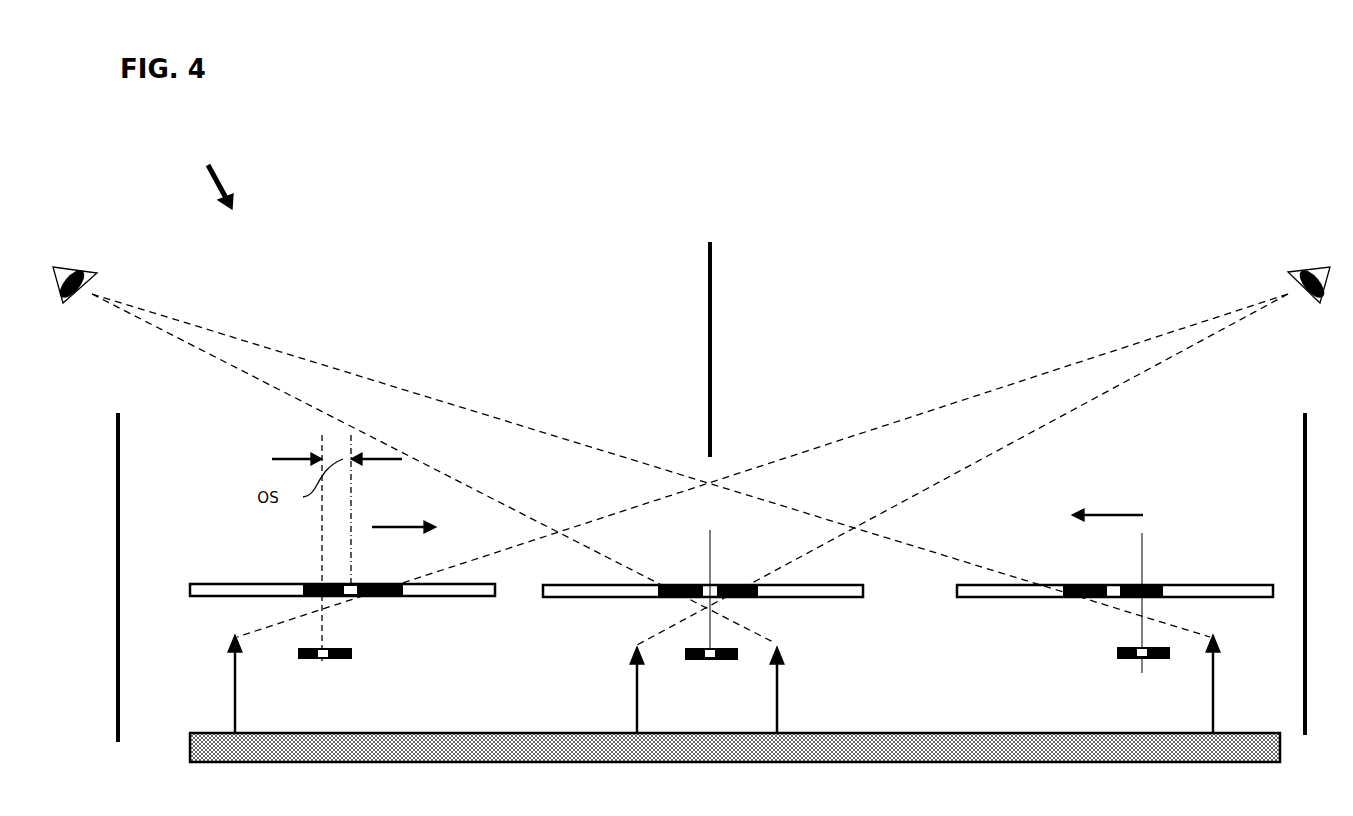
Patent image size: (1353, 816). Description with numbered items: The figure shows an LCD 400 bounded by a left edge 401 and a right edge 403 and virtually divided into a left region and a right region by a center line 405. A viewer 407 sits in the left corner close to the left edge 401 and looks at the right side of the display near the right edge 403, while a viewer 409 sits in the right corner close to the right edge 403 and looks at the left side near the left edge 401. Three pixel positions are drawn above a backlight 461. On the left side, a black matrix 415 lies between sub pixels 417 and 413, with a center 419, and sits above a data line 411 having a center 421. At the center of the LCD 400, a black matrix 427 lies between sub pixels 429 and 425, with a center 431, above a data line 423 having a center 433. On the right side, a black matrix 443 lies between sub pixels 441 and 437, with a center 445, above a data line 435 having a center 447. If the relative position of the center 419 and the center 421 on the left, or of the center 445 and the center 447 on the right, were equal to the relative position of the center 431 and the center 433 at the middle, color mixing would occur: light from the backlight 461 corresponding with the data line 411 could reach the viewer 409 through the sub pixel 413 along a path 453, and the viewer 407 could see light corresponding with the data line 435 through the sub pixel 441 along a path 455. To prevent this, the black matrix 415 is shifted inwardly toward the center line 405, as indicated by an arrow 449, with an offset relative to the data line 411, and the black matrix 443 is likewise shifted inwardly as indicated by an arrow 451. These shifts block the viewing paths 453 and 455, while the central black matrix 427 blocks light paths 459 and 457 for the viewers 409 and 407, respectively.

The LCD 400 is at (188, 157).
The left edge 401 is at (113, 573).
The right edge 403 is at (1303, 498).
The center line 405 is at (708, 298).
The viewer 407 is at (72, 268).
The viewer 409 is at (1310, 267).
The data line 411 is at (297, 652).
The sub pixel 413 is at (438, 598).
The black matrix 415 is at (320, 583).
The sub pixel 417 is at (250, 583).
The center of black matrix 419 is at (357, 583).
The center of data line 421 is at (324, 662).
The data line 423 is at (687, 652).
The sub pixel 425 is at (842, 598).
The black matrix 427 is at (682, 585).
The sub pixel 429 is at (610, 598).
The center of black matrix 431 is at (727, 585).
The center of data line 433 is at (712, 662).
The data line 435 is at (1117, 653).
The sub pixel 437 is at (1222, 598).
The sub pixel 441 is at (1003, 598).
The black matrix 443 is at (1153, 586).
The center of black matrix 445 is at (1113, 586).
The center of data line 447 is at (1143, 663).
The arrow 449 is at (402, 525).
The arrow 451 is at (1105, 513).
The path 453 is at (1025, 380).
The path 455 is at (352, 370).
The light path 457 is at (270, 382).
The light path 459 is at (942, 488).
The backlight 461 is at (192, 747).